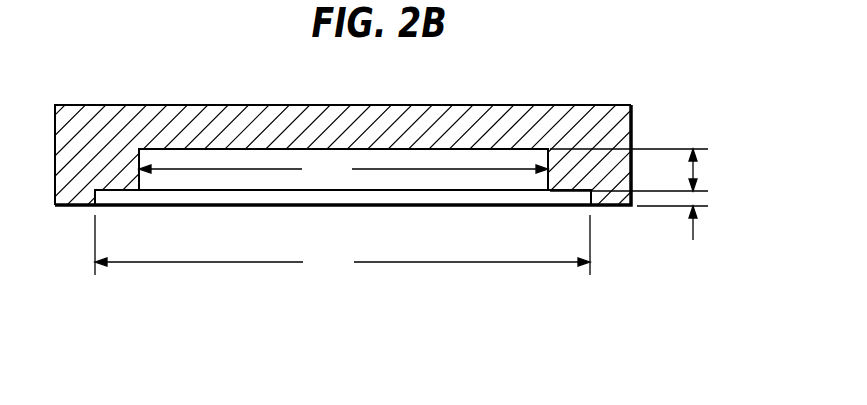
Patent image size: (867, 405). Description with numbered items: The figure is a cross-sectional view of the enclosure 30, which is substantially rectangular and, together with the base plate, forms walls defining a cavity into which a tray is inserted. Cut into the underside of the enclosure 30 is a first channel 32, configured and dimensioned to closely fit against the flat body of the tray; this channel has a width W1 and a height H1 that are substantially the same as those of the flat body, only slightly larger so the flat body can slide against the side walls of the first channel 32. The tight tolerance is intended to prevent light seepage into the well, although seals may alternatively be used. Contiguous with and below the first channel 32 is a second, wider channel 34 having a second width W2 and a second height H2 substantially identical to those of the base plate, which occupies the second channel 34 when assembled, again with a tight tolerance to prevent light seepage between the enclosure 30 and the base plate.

The enclosure 30 is at (590, 105).
The first channel 32 is at (167, 156).
The second channel 34 is at (405, 203).
The width of first channel W1 is at (343, 169).
The second width W2 is at (342, 246).
The height of first channel H1 is at (698, 171).
The second height H2 is at (698, 199).